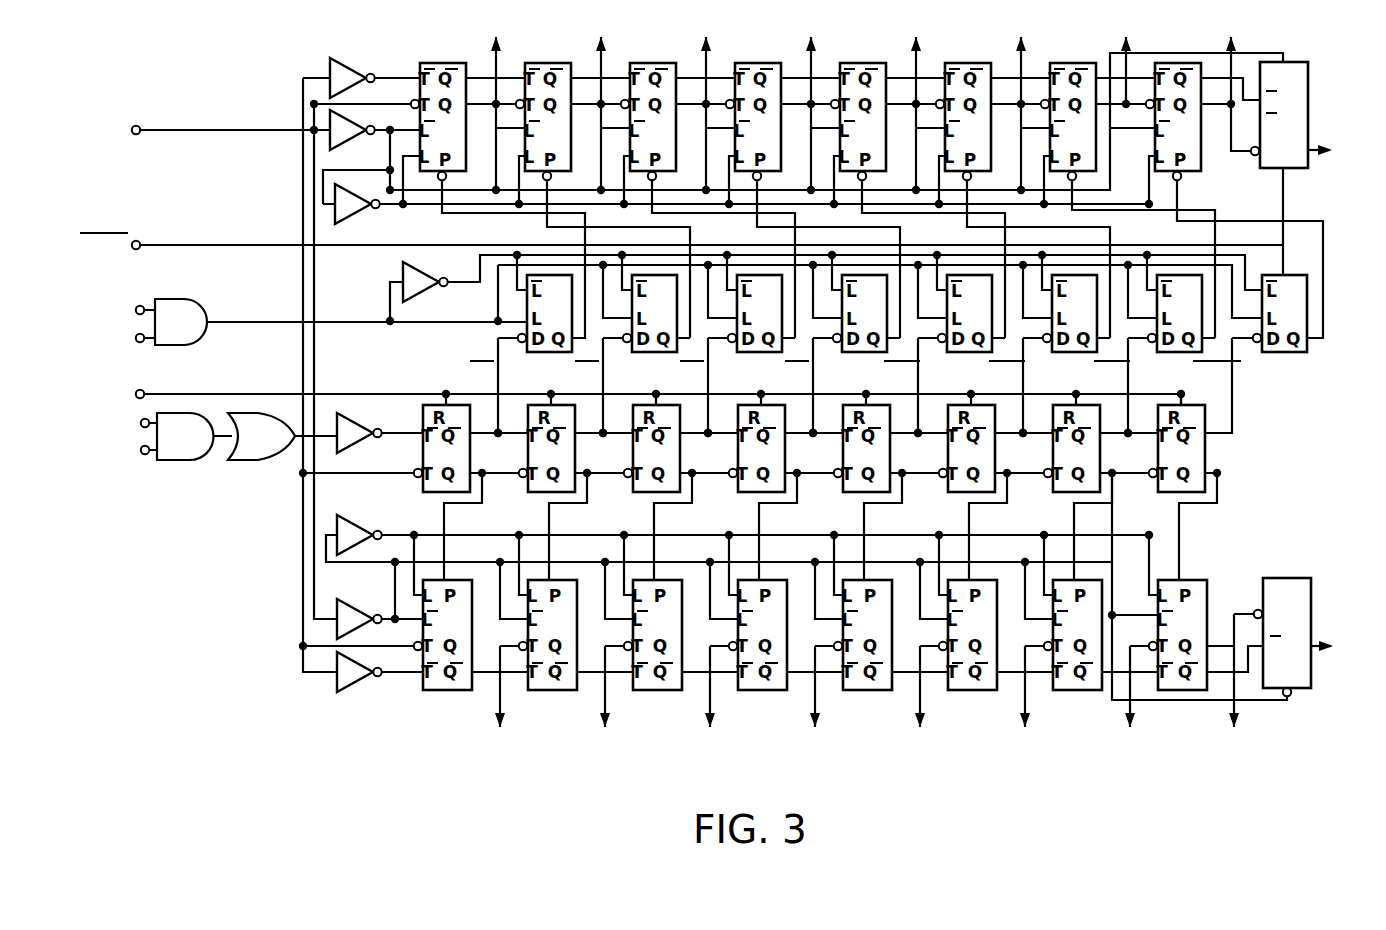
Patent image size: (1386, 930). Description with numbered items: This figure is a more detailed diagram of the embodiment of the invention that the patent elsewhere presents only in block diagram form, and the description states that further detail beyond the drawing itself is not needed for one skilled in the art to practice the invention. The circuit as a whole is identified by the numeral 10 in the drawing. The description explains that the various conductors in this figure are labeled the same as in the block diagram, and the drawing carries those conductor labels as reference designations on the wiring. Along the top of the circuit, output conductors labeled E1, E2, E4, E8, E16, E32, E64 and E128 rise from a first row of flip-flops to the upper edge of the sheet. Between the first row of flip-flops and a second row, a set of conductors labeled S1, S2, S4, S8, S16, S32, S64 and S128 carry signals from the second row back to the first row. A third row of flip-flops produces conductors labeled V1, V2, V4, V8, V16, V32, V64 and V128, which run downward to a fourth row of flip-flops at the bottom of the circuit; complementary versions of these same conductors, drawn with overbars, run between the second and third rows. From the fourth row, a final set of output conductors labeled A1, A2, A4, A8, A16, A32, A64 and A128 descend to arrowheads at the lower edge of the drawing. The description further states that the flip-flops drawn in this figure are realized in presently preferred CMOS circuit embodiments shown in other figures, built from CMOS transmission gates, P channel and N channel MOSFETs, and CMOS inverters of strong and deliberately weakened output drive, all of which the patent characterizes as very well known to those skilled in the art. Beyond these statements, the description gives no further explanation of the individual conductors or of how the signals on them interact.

The counter circuit 10 is at (221, 679).
The E1 output E1 is at (495, 103).
The E2 output E2 is at (600, 103).
The E4 output E4 is at (705, 103).
The E8 output E8 is at (810, 103).
The E16 output E16 is at (916, 103).
The E32 output E32 is at (1021, 103).
The E64 output E64 is at (1126, 60).
The E128 output E128 is at (1233, 84).
The S1 signal line S1 is at (513, 259).
The S2 signal line S2 is at (618, 259).
The S4 signal line S4 is at (723, 259).
The S8 signal line S8 is at (828, 259).
The S16 signal line S16 is at (933, 259).
The S32 signal line S32 is at (1038, 259).
The S64 signal line S64 is at (1143, 259).
The S128 signal line S128 is at (1250, 259).
The V1 flip-flop V1 is at (450, 485).
The V2 flip-flop V2 is at (555, 485).
The V4 flip-flop V4 is at (660, 485).
The V8 flip-flop V8 is at (765, 485).
The V16 flip-flop V16 is at (866, 485).
The V32 flip-flop V32 is at (971, 485).
The V64 flip-flop V64 is at (1073, 485).
The V128 flip-flop V128 is at (1173, 485).
The A1 output A1 is at (500, 701).
The A2 output A2 is at (605, 701).
The A4 output A4 is at (710, 701).
The A8 output A8 is at (815, 701).
The A16 output A16 is at (920, 701).
The A32 output A32 is at (1025, 701).
The A64 output A64 is at (1130, 701).
The A128 output A128 is at (1234, 685).